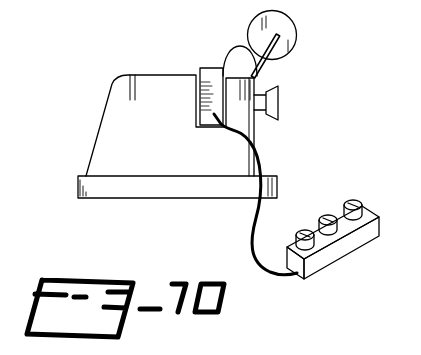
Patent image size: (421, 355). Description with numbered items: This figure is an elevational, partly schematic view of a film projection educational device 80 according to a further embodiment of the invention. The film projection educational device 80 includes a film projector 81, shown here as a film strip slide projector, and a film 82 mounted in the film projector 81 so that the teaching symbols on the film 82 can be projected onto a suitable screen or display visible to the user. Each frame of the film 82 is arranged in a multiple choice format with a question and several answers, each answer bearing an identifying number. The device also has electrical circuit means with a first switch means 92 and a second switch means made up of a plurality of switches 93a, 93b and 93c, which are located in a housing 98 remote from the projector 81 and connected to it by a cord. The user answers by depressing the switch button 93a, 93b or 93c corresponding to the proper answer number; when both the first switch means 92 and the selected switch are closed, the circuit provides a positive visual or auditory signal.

The film projection educational device 80 is at (207, 143).
The film projector 81 is at (148, 96).
The film 82 is at (233, 47).
The first switch means 92 is at (349, 237).
The switch button 93a is at (302, 277).
The switch button 93b is at (349, 256).
The switch button 93c is at (374, 242).
The housing 98 is at (321, 263).